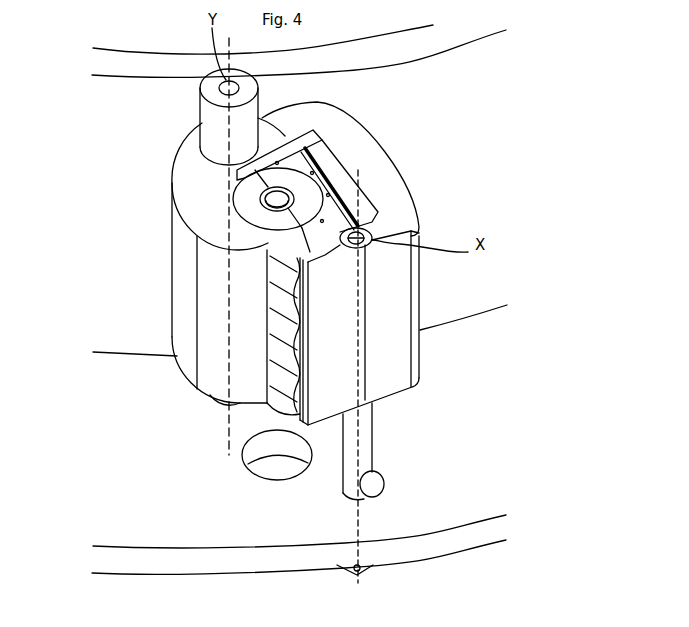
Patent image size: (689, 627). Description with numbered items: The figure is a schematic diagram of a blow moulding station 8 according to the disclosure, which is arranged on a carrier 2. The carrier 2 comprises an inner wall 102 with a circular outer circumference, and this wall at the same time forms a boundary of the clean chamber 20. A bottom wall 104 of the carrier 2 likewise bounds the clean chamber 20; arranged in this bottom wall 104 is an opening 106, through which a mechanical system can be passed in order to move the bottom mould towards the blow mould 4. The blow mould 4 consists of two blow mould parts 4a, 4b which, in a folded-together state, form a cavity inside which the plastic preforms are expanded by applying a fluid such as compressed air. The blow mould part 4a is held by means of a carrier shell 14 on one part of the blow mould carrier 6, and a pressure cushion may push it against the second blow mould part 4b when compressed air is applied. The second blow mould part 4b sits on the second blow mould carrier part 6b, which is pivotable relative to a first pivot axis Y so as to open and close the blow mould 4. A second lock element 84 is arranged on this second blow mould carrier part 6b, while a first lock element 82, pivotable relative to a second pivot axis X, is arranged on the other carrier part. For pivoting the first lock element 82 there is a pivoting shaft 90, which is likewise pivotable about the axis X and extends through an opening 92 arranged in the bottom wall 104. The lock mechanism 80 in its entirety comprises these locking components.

The carrier 2 is at (70, 452).
The blow mould 4 is at (245, 196).
The blow mould part 4a is at (305, 197).
The blow mould part 4b is at (250, 238).
The blow mould carrier 6 is at (411, 149).
The second blow mould carrier part 6b is at (205, 195).
The blow moulding station 8 is at (165, 331).
The carrier shell 14 is at (312, 158).
The clean chamber 20 is at (176, 490).
The lock mechanism 80 is at (385, 417).
The first lock element 82 is at (342, 312).
The second lock element 84 is at (287, 307).
The pivoting shaft 90 is at (362, 468).
The opening 92 is at (383, 490).
The inner wall 102 is at (468, 88).
The bottom wall 104 is at (193, 536).
The opening 106 is at (277, 468).